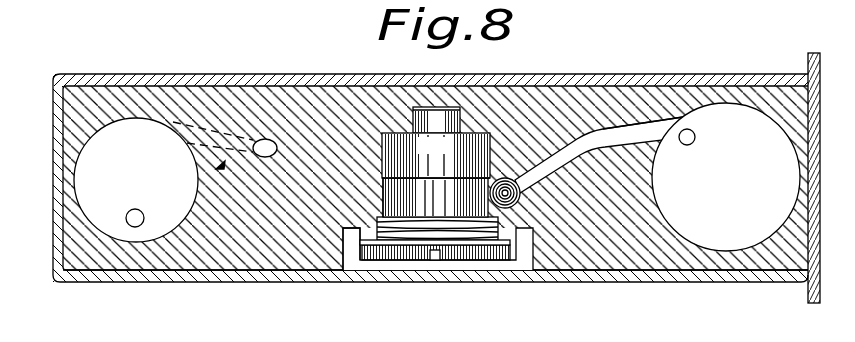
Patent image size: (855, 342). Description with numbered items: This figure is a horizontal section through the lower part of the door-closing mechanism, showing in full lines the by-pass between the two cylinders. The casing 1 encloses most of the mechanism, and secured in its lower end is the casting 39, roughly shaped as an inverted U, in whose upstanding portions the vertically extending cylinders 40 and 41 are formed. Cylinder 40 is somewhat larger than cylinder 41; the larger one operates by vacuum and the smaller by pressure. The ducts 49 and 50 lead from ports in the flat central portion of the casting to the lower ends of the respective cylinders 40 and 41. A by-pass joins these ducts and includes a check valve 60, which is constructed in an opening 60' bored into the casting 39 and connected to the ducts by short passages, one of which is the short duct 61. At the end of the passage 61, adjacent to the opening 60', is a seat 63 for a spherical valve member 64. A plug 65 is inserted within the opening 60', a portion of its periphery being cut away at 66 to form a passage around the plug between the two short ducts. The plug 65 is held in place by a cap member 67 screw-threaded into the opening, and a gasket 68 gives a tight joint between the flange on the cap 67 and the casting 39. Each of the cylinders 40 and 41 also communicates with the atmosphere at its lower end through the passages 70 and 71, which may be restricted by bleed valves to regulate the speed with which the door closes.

The casing 1 is at (242, 74).
The casting 39 is at (232, 250).
The cylinder 40 is at (769, 119).
The cylinder 41 is at (127, 120).
The duct 49 is at (620, 126).
The duct 50 is at (270, 140).
The check valve 60 is at (435, 245).
The opening 60' is at (334, 245).
The short duct 61 is at (549, 160).
The seat 63 is at (500, 218).
The spherical valve member 64 is at (508, 183).
The plug 65 is at (436, 142).
The cut-away portion 66 is at (383, 179).
The cap member 67 is at (410, 256).
The gasket 68 is at (356, 234).
The passage 70 is at (687, 145).
The passage 71 is at (141, 211).